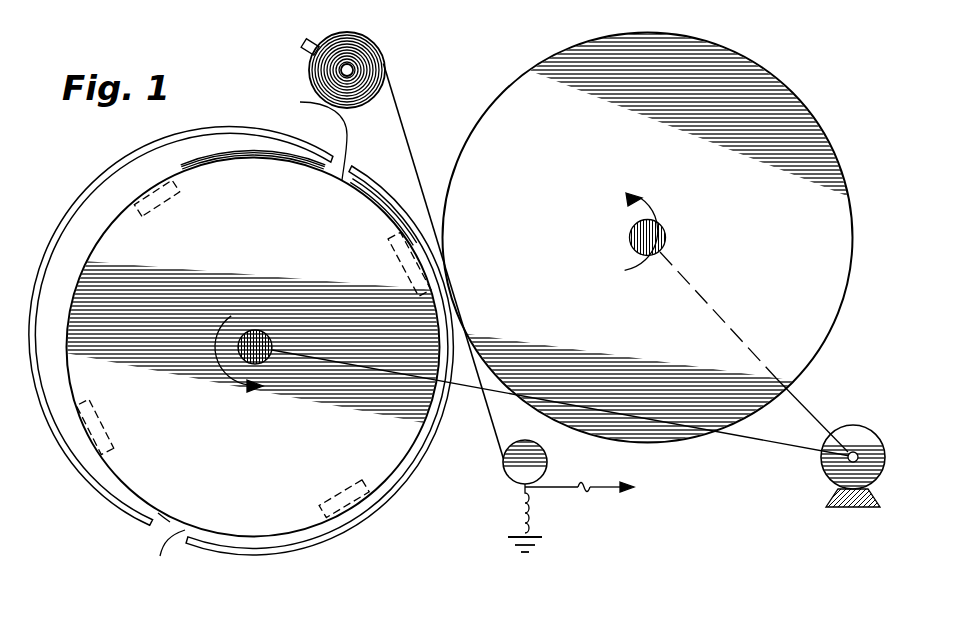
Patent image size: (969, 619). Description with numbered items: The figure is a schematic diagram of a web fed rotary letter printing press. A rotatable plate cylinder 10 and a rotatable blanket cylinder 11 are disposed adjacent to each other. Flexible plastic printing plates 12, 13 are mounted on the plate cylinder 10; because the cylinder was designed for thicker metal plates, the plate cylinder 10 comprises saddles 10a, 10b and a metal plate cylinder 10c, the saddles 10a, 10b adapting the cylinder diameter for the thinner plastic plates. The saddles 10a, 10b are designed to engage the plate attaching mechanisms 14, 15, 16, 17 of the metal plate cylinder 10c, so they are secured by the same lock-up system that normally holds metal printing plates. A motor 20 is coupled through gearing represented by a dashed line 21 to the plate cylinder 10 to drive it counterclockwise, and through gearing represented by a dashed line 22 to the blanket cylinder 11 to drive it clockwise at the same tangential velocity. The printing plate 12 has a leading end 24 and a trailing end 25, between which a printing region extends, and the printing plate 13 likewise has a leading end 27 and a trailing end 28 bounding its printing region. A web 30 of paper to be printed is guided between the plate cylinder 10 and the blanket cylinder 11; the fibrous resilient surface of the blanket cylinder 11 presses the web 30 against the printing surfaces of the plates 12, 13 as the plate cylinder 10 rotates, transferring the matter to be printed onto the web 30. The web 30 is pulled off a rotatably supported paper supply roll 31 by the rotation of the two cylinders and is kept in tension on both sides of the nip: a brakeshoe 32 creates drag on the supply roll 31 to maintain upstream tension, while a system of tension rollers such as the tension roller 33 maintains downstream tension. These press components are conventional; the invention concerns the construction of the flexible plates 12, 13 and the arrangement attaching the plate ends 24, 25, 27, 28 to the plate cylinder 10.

The plate cylinder 10 is at (201, 484).
The saddle 10a is at (223, 156).
The saddle 10b is at (423, 239).
The metal plate cylinder 10c is at (168, 531).
The blanket cylinder 11 is at (805, 106).
The printing plate 12 is at (80, 247).
The printing plate 13 is at (432, 463).
The plate attaching mechanism 14 is at (160, 214).
The plate attaching mechanism 15 is at (110, 437).
The plate attaching mechanism 16 is at (410, 291).
The plate attaching mechanism 17 is at (350, 493).
The motor 20 is at (856, 426).
The dashed line 21 is at (355, 366).
The dashed line 22 is at (712, 284).
The leading end 24 is at (148, 523).
The trailing end 25 is at (333, 151).
The leading end 27 is at (352, 171).
The trailing end 28 is at (160, 557).
The web 30 is at (404, 113).
The paper supply roll 31 is at (368, 39).
The brakeshoe 32 is at (306, 45).
The tension roller 33 is at (547, 463).